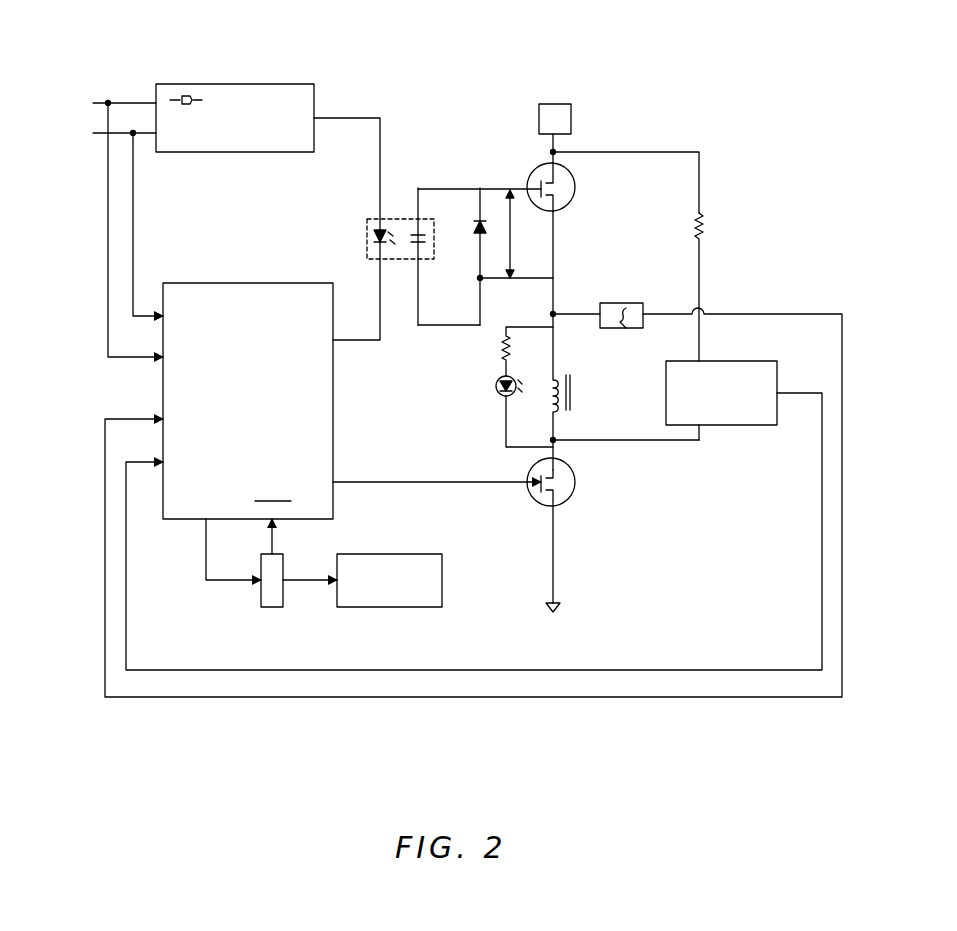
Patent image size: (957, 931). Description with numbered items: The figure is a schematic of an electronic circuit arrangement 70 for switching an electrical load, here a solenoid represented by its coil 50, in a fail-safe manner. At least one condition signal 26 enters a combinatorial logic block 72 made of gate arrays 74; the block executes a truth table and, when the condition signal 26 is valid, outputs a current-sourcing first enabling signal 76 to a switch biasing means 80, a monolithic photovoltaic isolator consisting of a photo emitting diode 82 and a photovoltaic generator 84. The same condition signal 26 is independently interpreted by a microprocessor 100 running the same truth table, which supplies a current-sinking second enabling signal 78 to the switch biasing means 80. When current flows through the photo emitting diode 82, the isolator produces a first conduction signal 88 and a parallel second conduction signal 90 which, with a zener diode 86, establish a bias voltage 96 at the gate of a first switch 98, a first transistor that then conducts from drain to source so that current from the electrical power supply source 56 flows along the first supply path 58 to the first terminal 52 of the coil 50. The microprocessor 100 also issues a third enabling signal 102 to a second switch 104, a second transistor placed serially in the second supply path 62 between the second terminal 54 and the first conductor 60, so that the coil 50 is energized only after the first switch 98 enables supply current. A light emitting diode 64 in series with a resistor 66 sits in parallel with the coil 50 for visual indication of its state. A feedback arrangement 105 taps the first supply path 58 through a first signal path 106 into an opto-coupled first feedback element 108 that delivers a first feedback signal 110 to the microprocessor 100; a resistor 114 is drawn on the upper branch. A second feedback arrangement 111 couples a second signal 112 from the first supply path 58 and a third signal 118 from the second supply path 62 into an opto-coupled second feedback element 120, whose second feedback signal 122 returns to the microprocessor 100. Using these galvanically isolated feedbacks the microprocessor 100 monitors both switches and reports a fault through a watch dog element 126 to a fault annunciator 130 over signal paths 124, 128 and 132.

The condition signal 26 is at (140, 48).
The electronic circuit arrangement 70 is at (432, 72).
The combinatorial logic block 72 is at (277, 98).
The gate arrays 74 is at (188, 96).
The first enabling signal 76 is at (382, 162).
The second enabling signal 78 is at (378, 296).
The switch biasing means 80 is at (396, 214).
The photo emitting diode 82 is at (374, 238).
The photovoltaic generator 84 is at (423, 236).
The zener diode 86 is at (482, 236).
The first conduction signal 88 is at (466, 188).
The second conduction signal 90 is at (420, 318).
The bias voltage 96 is at (517, 234).
The first switch 98 is at (534, 170).
The electrical power supply source 56 is at (574, 118).
The first supply path 58 is at (558, 248).
The second signal 112 is at (700, 174).
The resistor 114 is at (700, 230).
The feedback arrangement 105 is at (752, 230).
The second feedback element 120 is at (734, 370).
The first feedback element 108 is at (626, 326).
The first signal path 106 is at (588, 320).
The first feedback signal 110 is at (846, 336).
The second feedback arrangement 111 is at (880, 416).
The second feedback signal 122 is at (820, 544).
The third signal 118 is at (668, 444).
The resistor 66 is at (503, 350).
The light emitting diode 64 is at (496, 386).
The first terminal 52 is at (553, 380).
The coil 50 is at (551, 398).
The second terminal 54 is at (551, 436).
The third enabling signal 102 is at (406, 480).
The second switch 104 is at (576, 478).
The second supply path 62 is at (558, 552).
The first conductor 60 is at (560, 606).
The microprocessor 100 is at (282, 352).
The signal path 124 is at (204, 561).
The watch dog element 126 is at (270, 592).
The signal path 128 is at (314, 582).
The fault annunciator 130 is at (408, 566).
The signal path 132 is at (274, 542).